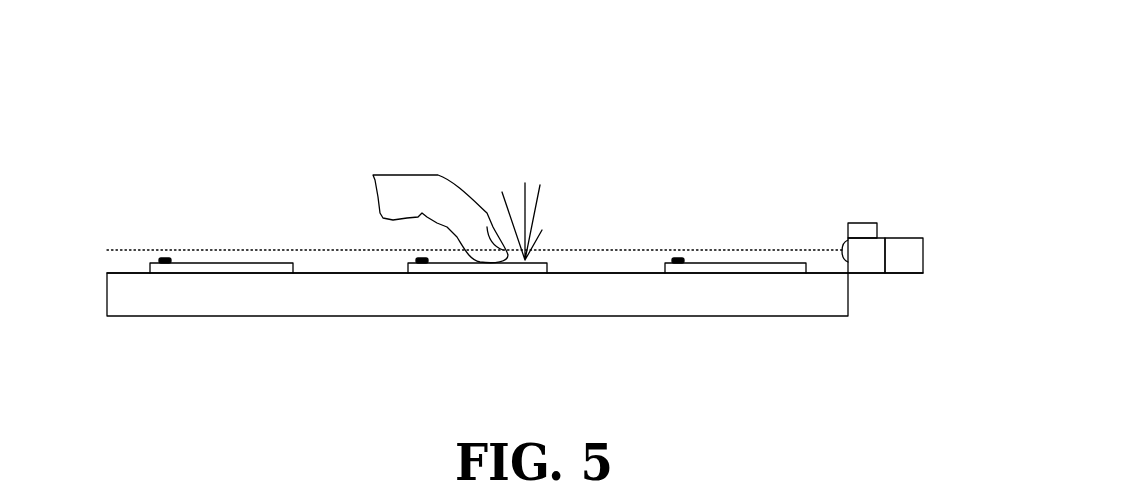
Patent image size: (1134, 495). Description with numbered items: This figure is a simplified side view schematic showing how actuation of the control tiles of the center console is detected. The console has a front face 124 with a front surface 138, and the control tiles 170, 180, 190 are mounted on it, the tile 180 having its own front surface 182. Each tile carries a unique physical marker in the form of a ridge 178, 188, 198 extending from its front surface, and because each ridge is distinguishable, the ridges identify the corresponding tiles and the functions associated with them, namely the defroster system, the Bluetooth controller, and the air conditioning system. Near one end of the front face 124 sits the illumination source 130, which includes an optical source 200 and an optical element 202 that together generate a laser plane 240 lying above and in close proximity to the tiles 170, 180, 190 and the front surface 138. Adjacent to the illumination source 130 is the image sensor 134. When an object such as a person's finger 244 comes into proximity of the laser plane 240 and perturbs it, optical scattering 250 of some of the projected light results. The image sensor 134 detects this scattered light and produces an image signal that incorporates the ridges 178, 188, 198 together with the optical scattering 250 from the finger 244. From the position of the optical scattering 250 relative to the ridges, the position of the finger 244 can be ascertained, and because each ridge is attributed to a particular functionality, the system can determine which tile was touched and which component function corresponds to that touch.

The front face 124 is at (803, 300).
The illumination source 130 is at (908, 278).
The image sensor 134 is at (853, 223).
The front surface 138 is at (820, 273).
The control tile 170 is at (728, 278).
The ridge 178 is at (677, 265).
The control tile 180 is at (493, 278).
The front surface 182 is at (273, 263).
The ridge 188 is at (422, 265).
The control tile 190 is at (225, 278).
The ridge 198 is at (165, 258).
The optical source 200 is at (915, 238).
The optical element 202 is at (880, 240).
The laser plane 240 is at (615, 250).
The finger 244 is at (439, 173).
The optical scattering 250 is at (525, 258).